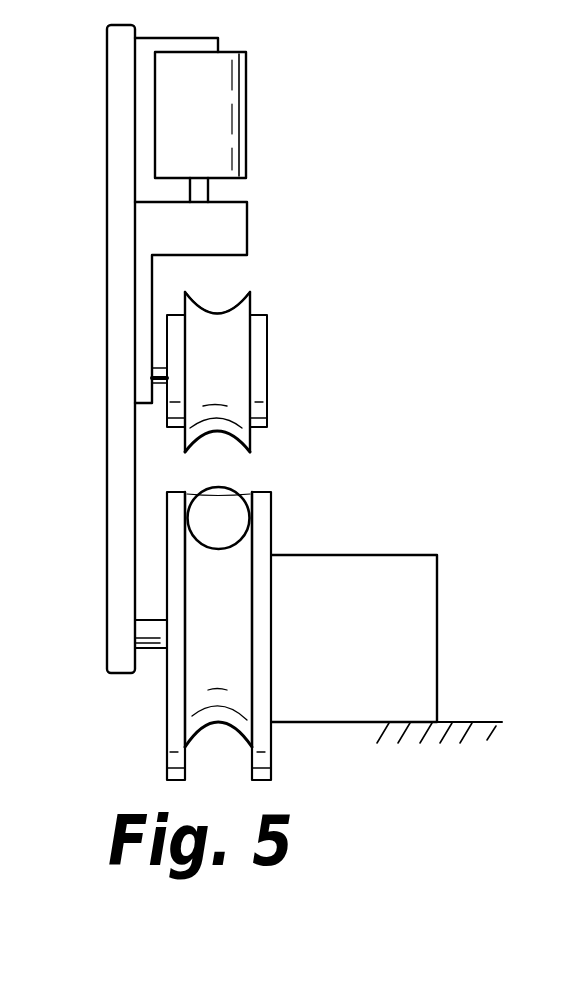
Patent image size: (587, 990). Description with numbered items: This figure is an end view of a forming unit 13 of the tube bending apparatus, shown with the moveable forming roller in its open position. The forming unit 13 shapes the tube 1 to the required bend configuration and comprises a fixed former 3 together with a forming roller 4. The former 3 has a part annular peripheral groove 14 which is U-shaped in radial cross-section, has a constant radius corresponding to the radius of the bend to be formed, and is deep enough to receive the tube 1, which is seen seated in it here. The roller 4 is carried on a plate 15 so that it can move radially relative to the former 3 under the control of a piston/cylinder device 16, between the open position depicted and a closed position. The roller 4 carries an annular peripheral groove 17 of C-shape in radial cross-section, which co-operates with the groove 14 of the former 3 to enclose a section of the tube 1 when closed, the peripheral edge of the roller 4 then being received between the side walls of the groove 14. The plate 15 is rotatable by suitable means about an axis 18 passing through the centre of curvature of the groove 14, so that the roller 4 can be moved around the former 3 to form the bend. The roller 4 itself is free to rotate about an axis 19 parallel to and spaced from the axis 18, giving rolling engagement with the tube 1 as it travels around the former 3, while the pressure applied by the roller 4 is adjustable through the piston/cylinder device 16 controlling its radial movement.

The tube 1 is at (233, 515).
The former 3 is at (178, 727).
The forming roller 4 is at (230, 360).
The forming unit 13 is at (373, 372).
The peripheral groove 14 is at (246, 492).
The plate 15 is at (118, 313).
The piston/cylinder device 16 is at (237, 133).
The annular peripheral groove 17 is at (223, 312).
The axis 18 is at (167, 633).
The axis 19 is at (168, 373).